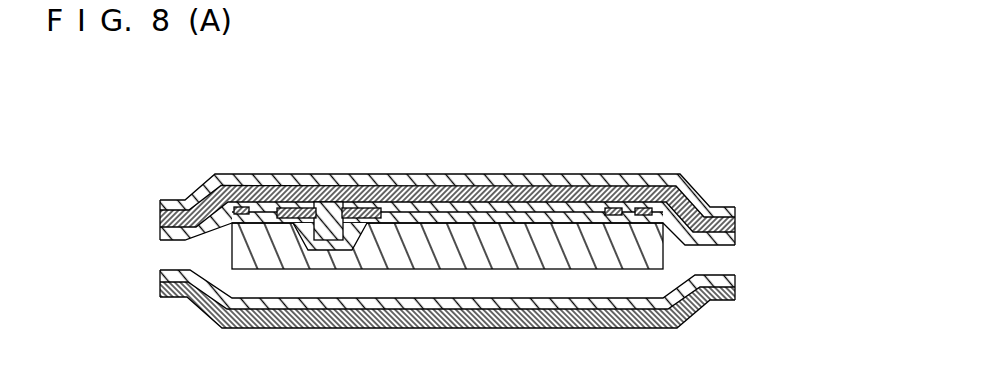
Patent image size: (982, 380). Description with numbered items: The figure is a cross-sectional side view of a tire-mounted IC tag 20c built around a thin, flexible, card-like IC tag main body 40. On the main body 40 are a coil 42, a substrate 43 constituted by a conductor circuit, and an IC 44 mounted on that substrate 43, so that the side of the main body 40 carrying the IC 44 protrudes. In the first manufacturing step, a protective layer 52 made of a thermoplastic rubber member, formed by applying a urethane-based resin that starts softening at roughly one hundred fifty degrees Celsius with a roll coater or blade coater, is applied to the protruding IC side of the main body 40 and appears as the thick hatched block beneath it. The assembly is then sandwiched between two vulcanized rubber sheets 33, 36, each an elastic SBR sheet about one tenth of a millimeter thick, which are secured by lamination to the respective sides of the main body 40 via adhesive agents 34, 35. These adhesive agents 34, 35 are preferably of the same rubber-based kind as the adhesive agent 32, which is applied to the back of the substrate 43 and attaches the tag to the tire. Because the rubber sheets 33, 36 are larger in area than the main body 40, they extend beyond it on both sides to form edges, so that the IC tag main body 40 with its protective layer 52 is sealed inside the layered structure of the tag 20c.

The liquid crystal display panel module 20c is at (192, 121).
The adhesive agent 32 is at (704, 203).
The rubber sheet 33 is at (735, 224).
The adhesive agent 34 is at (735, 237).
The adhesive agent 35 is at (722, 282).
The rubber sheet 36 is at (732, 302).
The IC tag main body 40 is at (463, 228).
The coil 42 is at (247, 210).
The substrate 43 is at (297, 210).
The IC 44 is at (334, 212).
The protective layer 52 is at (547, 253).